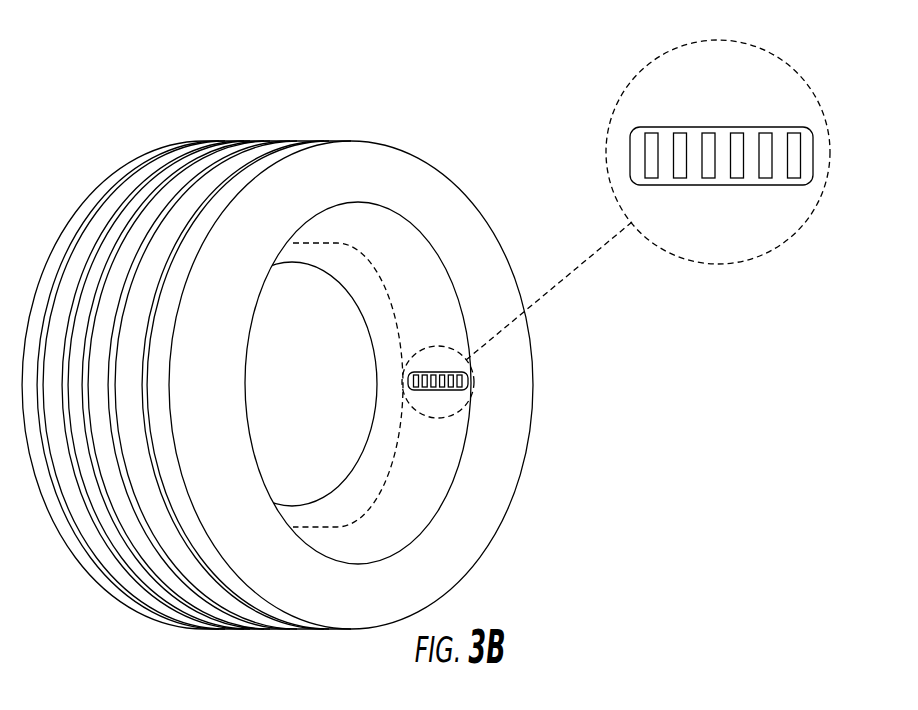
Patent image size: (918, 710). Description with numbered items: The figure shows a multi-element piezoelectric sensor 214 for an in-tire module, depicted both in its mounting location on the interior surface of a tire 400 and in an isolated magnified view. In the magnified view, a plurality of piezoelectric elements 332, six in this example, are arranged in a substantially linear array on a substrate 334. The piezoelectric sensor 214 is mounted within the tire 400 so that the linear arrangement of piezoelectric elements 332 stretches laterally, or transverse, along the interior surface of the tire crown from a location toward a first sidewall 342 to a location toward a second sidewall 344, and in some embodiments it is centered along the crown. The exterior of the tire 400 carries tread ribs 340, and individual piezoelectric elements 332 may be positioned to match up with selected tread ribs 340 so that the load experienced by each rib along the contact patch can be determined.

The piezoelectric sensor 214 is at (421, 346).
The piezoelectric elements 332 is at (692, 103).
The substrate 334 is at (722, 175).
The tread ribs 340 is at (238, 104).
The first sidewall 342 is at (386, 351).
The second sidewall 344 is at (566, 391).
The tire 400 is at (521, 203).